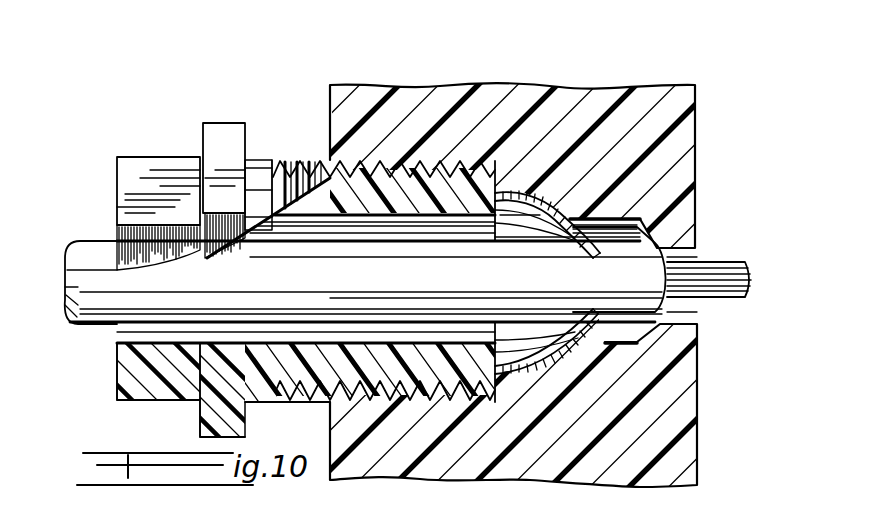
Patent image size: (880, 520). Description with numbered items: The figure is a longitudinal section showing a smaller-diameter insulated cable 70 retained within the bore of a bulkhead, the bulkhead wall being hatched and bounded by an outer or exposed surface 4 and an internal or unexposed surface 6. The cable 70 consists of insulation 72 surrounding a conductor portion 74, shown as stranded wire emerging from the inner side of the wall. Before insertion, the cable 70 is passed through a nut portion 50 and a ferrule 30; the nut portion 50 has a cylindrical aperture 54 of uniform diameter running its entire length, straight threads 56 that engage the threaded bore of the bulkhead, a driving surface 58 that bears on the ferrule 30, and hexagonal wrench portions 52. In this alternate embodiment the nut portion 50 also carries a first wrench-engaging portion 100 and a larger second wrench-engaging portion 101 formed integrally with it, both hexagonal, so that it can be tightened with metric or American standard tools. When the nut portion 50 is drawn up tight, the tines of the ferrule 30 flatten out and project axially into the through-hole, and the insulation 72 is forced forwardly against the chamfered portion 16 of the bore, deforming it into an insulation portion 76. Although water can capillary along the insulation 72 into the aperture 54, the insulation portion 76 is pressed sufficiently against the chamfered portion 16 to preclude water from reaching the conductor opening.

The outer or exposed surface 4 is at (333, 110).
The internal or unexposed surface 6 is at (696, 133).
The chamfered portion 16 is at (627, 345).
The ferrule 30 is at (564, 200).
The nut portion 50 is at (300, 158).
The hexagonal wrench portions 52 is at (198, 412).
The cylindrical aperture 54 is at (140, 342).
The straight threads 56 is at (323, 180).
The driving surface 58 is at (497, 200).
The cable 70 is at (84, 328).
The insulation 72 is at (310, 307).
The conductor portion 74 is at (730, 262).
The insulation portion 76 is at (657, 242).
The first wrench-engaging portion 100 is at (157, 157).
The second wrench-engaging portion 101 is at (227, 123).